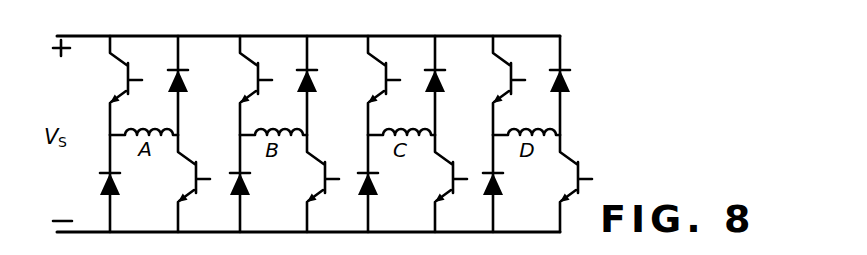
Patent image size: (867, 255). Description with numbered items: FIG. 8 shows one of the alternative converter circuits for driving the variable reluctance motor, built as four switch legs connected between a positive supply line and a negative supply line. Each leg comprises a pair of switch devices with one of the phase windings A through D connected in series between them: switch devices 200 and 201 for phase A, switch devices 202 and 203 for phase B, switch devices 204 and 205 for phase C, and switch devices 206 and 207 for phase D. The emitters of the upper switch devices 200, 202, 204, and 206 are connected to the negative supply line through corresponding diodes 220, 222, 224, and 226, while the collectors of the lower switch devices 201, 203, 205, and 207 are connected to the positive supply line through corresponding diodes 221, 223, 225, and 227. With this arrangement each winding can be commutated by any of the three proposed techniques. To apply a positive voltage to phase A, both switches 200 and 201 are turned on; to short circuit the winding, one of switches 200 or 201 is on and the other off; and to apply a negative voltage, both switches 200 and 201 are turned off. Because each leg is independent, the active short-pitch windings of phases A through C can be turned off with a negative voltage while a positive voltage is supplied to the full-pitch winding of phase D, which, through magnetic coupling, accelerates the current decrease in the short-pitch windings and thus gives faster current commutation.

The switch device 200 is at (120, 95).
The switch device 201 is at (188, 191).
The switch device 202 is at (250, 93).
The switch device 203 is at (318, 192).
The switch device 204 is at (378, 92).
The switch device 205 is at (445, 192).
The switch device 206 is at (500, 92).
The switch device 207 is at (570, 192).
The diode 220 is at (100, 183).
The diode 221 is at (183, 92).
The diode 222 is at (238, 197).
The diode 223 is at (312, 92).
The diode 224 is at (368, 197).
The diode 225 is at (438, 92).
The diode 226 is at (493, 197).
The diode 227 is at (566, 92).